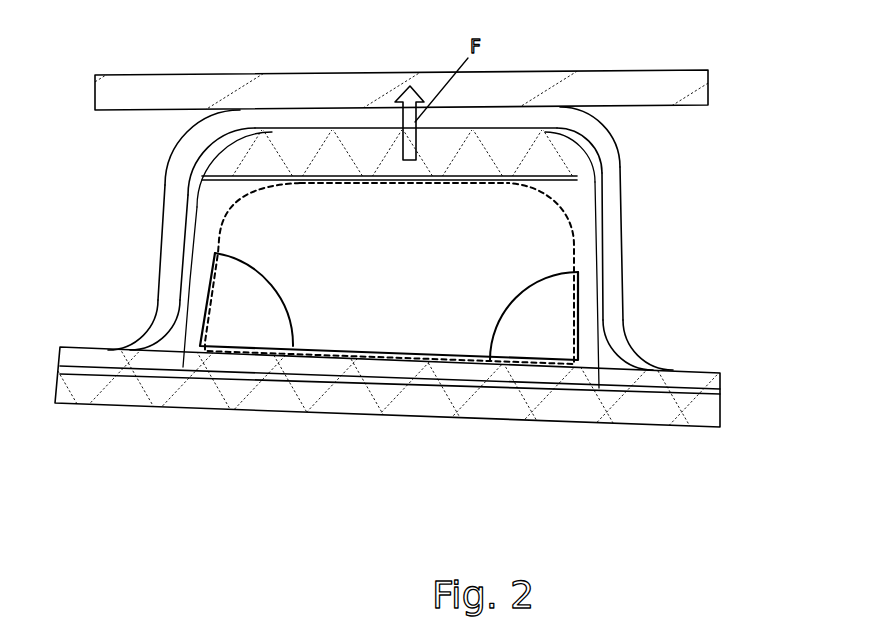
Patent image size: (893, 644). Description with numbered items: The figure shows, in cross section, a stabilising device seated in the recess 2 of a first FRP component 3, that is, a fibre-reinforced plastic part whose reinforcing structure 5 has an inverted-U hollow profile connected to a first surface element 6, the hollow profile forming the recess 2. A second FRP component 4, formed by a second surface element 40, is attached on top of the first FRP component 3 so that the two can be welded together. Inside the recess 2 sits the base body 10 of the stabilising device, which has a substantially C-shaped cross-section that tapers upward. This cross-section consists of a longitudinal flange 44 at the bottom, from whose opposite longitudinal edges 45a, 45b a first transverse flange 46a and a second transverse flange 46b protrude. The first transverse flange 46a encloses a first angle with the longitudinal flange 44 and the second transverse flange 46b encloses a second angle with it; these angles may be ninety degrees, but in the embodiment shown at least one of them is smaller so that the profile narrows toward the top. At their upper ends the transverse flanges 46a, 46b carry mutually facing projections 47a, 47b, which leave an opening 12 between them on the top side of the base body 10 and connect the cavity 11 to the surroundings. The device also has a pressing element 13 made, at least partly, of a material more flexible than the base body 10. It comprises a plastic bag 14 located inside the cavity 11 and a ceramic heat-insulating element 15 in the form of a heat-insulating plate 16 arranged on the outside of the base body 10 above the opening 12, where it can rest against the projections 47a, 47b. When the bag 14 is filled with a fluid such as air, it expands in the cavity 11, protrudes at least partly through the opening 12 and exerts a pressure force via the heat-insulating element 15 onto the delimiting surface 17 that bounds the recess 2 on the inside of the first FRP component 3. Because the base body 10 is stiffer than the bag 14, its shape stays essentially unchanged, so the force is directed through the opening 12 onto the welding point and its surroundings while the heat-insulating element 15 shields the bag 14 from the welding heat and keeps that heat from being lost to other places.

The recess 2 is at (189, 179).
The first FRP component 3 is at (686, 270).
The second FRP component 4 is at (722, 80).
The reinforcing structure 5 is at (640, 237).
The first surface element 6 is at (205, 390).
The base body 10 is at (588, 367).
The cavity 11 is at (442, 329).
The opening 12 is at (438, 198).
The pressing element 13 is at (382, 205).
The bag 14 is at (584, 225).
The heat-insulating element 15 is at (480, 138).
The heat-insulating plate 16 is at (520, 140).
The delimiting surface 17 is at (291, 116).
The second surface element 40 is at (636, 78).
The longitudinal flange 44 is at (550, 380).
The first longitudinal edge 45a is at (182, 338).
The second longitudinal edge 45b is at (595, 358).
The first transverse flange 46a is at (197, 272).
The second transverse flange 46b is at (590, 295).
The first projection 47a is at (255, 188).
The second projection 47b is at (533, 182).